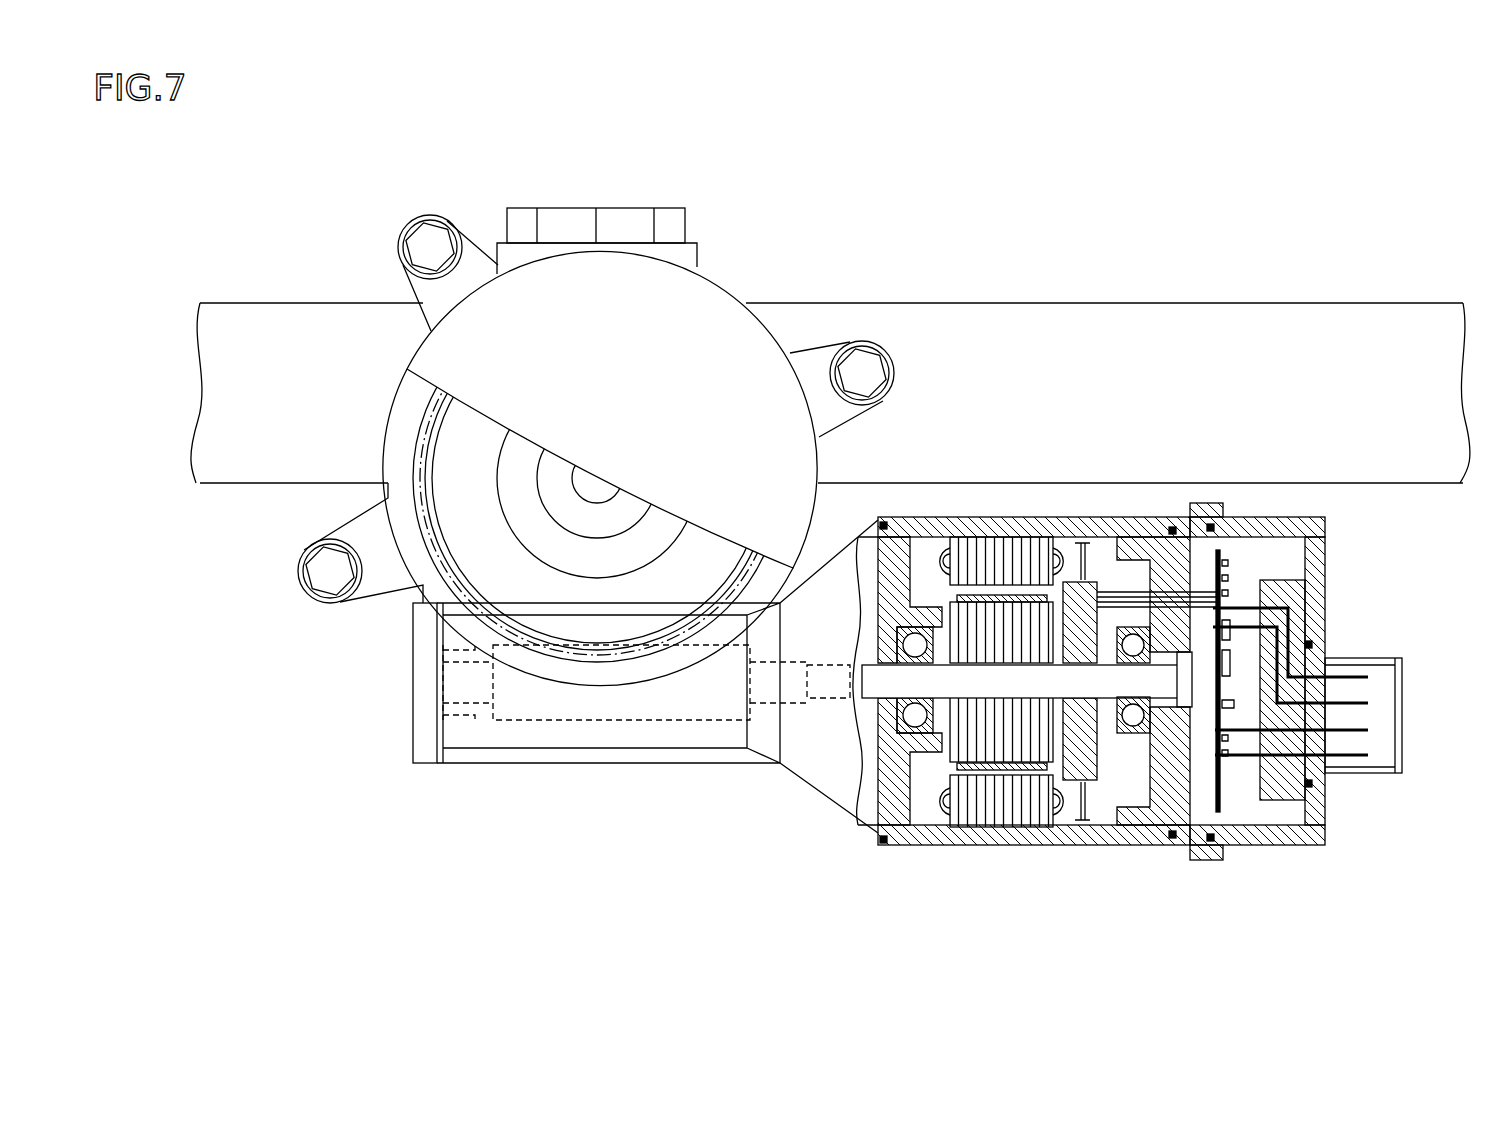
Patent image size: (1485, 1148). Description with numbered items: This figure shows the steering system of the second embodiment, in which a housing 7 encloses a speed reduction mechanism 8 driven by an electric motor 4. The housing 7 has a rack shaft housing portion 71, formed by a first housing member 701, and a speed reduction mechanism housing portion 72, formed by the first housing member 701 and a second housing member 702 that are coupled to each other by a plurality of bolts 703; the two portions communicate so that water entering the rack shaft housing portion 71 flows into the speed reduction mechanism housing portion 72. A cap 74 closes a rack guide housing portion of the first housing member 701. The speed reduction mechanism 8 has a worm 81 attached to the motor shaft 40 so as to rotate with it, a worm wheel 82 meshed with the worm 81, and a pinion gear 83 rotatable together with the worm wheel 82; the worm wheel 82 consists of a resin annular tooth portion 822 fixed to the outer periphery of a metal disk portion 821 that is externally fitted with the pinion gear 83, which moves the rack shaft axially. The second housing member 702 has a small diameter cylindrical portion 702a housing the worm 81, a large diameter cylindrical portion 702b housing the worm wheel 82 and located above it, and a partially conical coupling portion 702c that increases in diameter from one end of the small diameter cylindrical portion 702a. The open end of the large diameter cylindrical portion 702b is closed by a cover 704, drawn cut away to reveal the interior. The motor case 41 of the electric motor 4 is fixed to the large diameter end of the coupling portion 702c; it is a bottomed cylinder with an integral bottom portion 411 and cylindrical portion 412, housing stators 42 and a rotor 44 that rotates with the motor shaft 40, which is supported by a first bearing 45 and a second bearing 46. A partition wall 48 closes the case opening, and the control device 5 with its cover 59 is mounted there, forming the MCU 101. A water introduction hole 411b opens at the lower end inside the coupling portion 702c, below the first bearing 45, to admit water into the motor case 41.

The housing 7 is at (872, 252).
The rack shaft housing portion 71 is at (301, 296).
The first housing member 701 is at (950, 300).
The bolts 703 is at (427, 235).
The cover 704 is at (705, 305).
The cap 74 is at (639, 207).
The worm wheel 82 is at (529, 478).
The annular tooth portion 822 is at (597, 478).
The disk portion 821 is at (512, 455).
The pinion gear 83 is at (551, 478).
The speed reduction mechanism housing portion 72 is at (593, 706).
The second housing member 702 is at (645, 706).
The large diameter cylindrical portion 702b is at (552, 677).
The small diameter cylindrical portion 702a is at (629, 762).
The coupling portion 702c is at (783, 681).
The speed reduction mechanism 8 is at (468, 724).
The worm 81 is at (530, 722).
The electric motor 4 is at (1035, 685).
The motor case 41 is at (1021, 728).
The bottom portion 411 is at (910, 793).
The water introduction hole 411b is at (894, 718).
The cylindrical portion 412 is at (1020, 827).
The first bearing 45 is at (913, 627).
The stators 42 is at (973, 525).
The rotor 44 is at (998, 590).
The motor shaft 40 is at (1073, 682).
The second bearing 46 is at (1123, 627).
The partition wall 48 is at (1180, 543).
The control device 5 is at (1293, 675).
The cover 59 is at (1248, 520).
The MCU 101 is at (1350, 597).